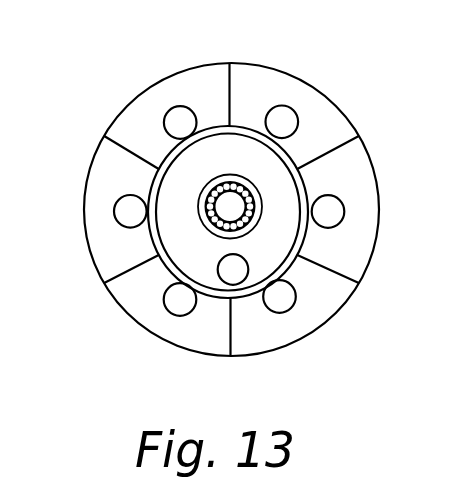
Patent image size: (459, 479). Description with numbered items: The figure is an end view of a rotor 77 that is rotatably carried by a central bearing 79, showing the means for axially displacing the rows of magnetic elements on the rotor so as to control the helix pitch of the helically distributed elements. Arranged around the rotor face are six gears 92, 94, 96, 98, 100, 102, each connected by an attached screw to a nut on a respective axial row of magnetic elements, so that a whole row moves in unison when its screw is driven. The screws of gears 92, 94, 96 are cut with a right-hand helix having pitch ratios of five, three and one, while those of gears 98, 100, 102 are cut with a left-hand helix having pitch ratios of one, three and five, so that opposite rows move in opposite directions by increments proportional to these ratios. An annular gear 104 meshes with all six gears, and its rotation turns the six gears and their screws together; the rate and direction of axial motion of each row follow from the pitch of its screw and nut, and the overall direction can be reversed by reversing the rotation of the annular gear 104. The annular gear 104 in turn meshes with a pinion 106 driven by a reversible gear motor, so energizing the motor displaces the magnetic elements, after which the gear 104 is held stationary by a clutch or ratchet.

The rotor 77 is at (288, 70).
The bearing 79 is at (211, 178).
The gear 92 is at (286, 108).
The gear 94 is at (322, 202).
The gear 96 is at (278, 291).
The gear 98 is at (170, 296).
The gear 100 is at (116, 202).
The gear 102 is at (172, 99).
The annular gear 104 is at (295, 175).
The pinion 106 is at (232, 276).